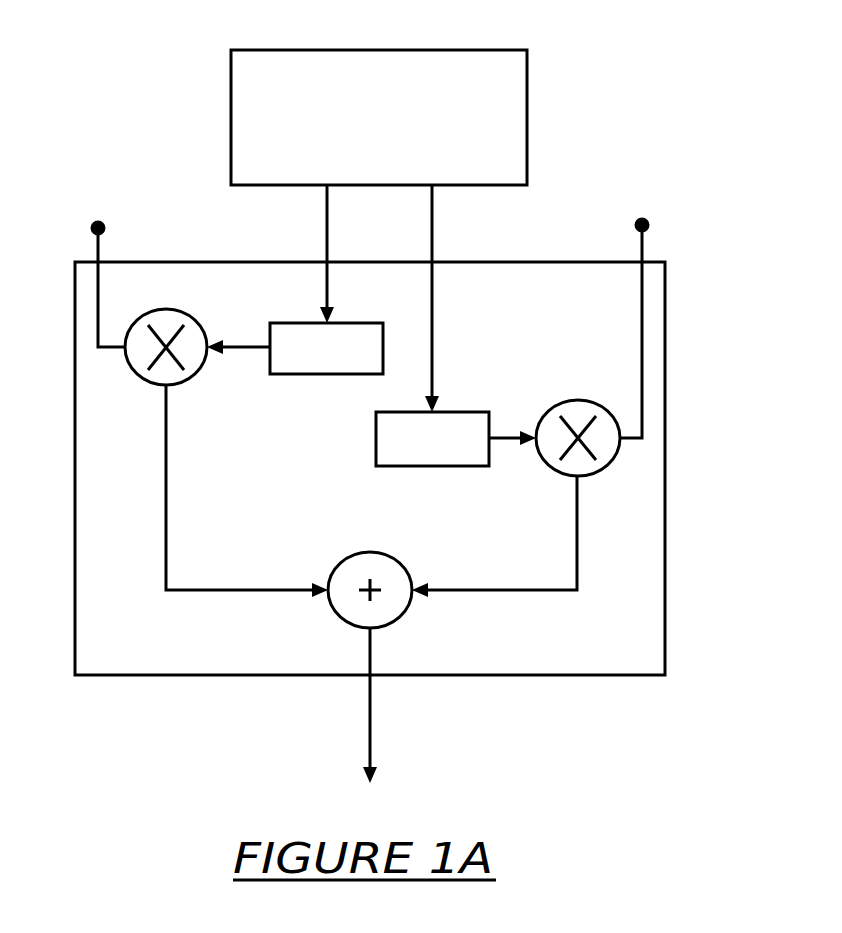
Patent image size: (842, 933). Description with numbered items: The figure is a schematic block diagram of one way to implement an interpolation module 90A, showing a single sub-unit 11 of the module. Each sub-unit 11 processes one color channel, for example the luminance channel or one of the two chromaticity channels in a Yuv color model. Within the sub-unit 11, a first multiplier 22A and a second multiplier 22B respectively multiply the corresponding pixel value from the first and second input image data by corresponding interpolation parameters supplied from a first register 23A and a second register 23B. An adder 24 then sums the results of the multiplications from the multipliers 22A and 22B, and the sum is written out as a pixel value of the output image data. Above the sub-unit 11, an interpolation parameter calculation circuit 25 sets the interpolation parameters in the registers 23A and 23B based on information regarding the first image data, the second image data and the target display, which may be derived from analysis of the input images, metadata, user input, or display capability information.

The interpolation module 90A is at (138, 86).
The circuit 25 is at (377, 50).
The sub-unit 11 is at (75, 372).
The multiplier 22A is at (195, 374).
The multiplier 22B is at (568, 403).
The register 23A is at (290, 323).
The register 23B is at (376, 441).
The adder 24 is at (398, 563).